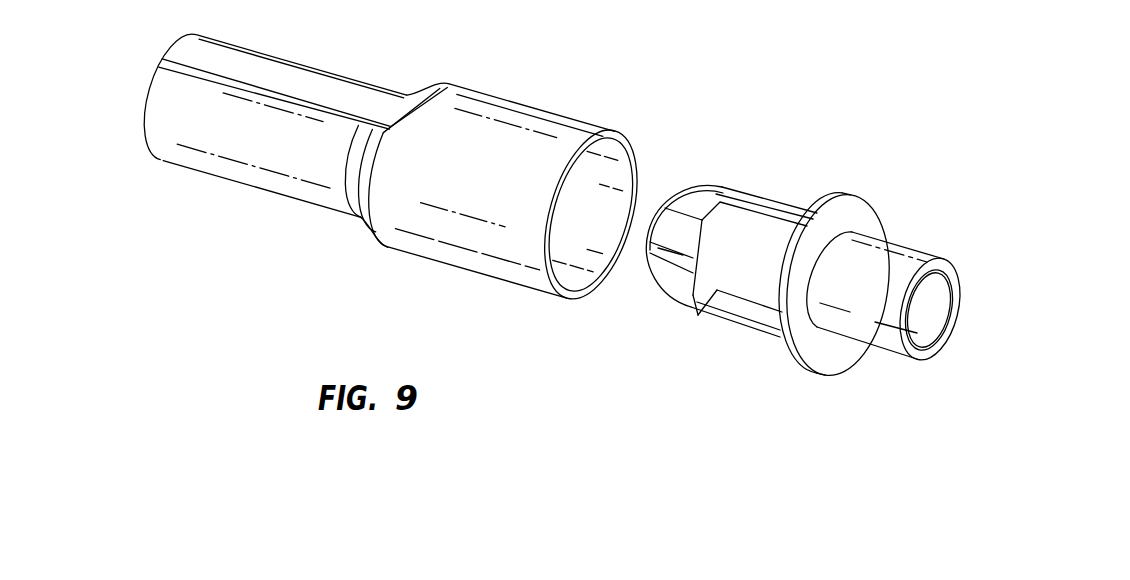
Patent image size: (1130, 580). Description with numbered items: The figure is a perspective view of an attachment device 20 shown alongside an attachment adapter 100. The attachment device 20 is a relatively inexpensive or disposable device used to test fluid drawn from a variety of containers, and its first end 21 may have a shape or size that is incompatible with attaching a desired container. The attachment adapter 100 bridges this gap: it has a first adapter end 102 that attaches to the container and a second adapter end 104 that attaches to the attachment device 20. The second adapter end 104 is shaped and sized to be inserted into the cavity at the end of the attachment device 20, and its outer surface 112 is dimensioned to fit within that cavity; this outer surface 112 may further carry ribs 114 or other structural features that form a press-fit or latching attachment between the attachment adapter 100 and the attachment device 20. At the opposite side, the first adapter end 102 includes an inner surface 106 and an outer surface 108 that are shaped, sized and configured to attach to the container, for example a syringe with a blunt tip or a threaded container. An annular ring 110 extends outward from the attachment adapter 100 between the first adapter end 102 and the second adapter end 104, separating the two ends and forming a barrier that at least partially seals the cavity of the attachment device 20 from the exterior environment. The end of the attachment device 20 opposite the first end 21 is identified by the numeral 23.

The attachment device 20 is at (373, 187).
The first end 21 is at (554, 306).
The closed end of housing 23 is at (160, 171).
The attachment adapter 100 is at (841, 270).
The first adapter end 102 is at (913, 327).
The second adapter end 104 is at (725, 185).
The inner surface 106 is at (933, 310).
The outer surface 108 is at (873, 332).
The annular ring 110 is at (787, 360).
The outer surface 112 is at (699, 311).
The ribs 114 is at (697, 202).